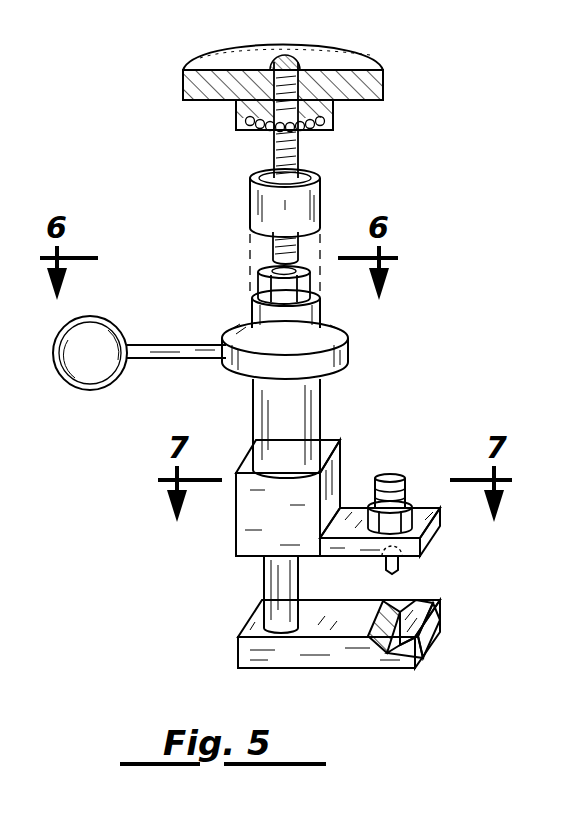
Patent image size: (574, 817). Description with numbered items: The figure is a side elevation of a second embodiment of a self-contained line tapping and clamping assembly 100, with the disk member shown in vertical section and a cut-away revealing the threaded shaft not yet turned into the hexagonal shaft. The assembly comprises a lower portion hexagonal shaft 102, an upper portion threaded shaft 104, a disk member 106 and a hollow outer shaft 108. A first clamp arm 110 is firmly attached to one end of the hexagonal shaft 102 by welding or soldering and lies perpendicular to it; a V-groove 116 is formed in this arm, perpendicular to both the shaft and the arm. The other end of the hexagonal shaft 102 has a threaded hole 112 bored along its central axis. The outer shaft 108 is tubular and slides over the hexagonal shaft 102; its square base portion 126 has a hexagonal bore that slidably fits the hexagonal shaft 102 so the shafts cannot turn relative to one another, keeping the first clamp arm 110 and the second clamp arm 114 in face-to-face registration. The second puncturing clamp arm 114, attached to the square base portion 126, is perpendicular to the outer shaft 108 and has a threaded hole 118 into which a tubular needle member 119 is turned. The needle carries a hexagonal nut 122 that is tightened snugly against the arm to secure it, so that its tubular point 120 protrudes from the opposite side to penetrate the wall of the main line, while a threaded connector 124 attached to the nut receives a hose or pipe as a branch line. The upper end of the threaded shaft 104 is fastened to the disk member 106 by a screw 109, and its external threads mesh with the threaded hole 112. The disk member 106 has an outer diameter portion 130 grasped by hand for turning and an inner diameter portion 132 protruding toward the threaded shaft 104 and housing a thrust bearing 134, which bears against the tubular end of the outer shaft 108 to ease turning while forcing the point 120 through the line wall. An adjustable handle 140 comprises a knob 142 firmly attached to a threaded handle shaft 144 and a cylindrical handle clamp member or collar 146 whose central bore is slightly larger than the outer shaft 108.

The line tapping and clamping assembly 100 is at (215, 265).
The hexagonal shaft 102 is at (268, 294).
The threaded shaft 104 is at (300, 151).
The disk member 106 is at (368, 62).
The hollow outer shaft 108 is at (306, 406).
The screw 109 is at (288, 62).
The first clamp arm 110 is at (327, 656).
The threaded hole 112 is at (278, 265).
The second clamp arm 114 is at (332, 488).
The V-groove 116 is at (398, 617).
The threaded hole 118 is at (432, 543).
The tubular needle member 119 is at (420, 474).
The point 120 is at (398, 568).
The hexagonal nut 122 is at (412, 500).
The threaded connector 124 is at (400, 478).
The square base portion 126 is at (240, 534).
The outer diameter portion 130 is at (383, 92).
The inner diameter portion 132 is at (338, 121).
The thrust bearing 134 is at (262, 126).
The adjustable handle 140 is at (139, 372).
The knob 142 is at (80, 342).
The handle shaft 144 is at (163, 345).
The cylindrical handle clamp member 146 is at (352, 343).